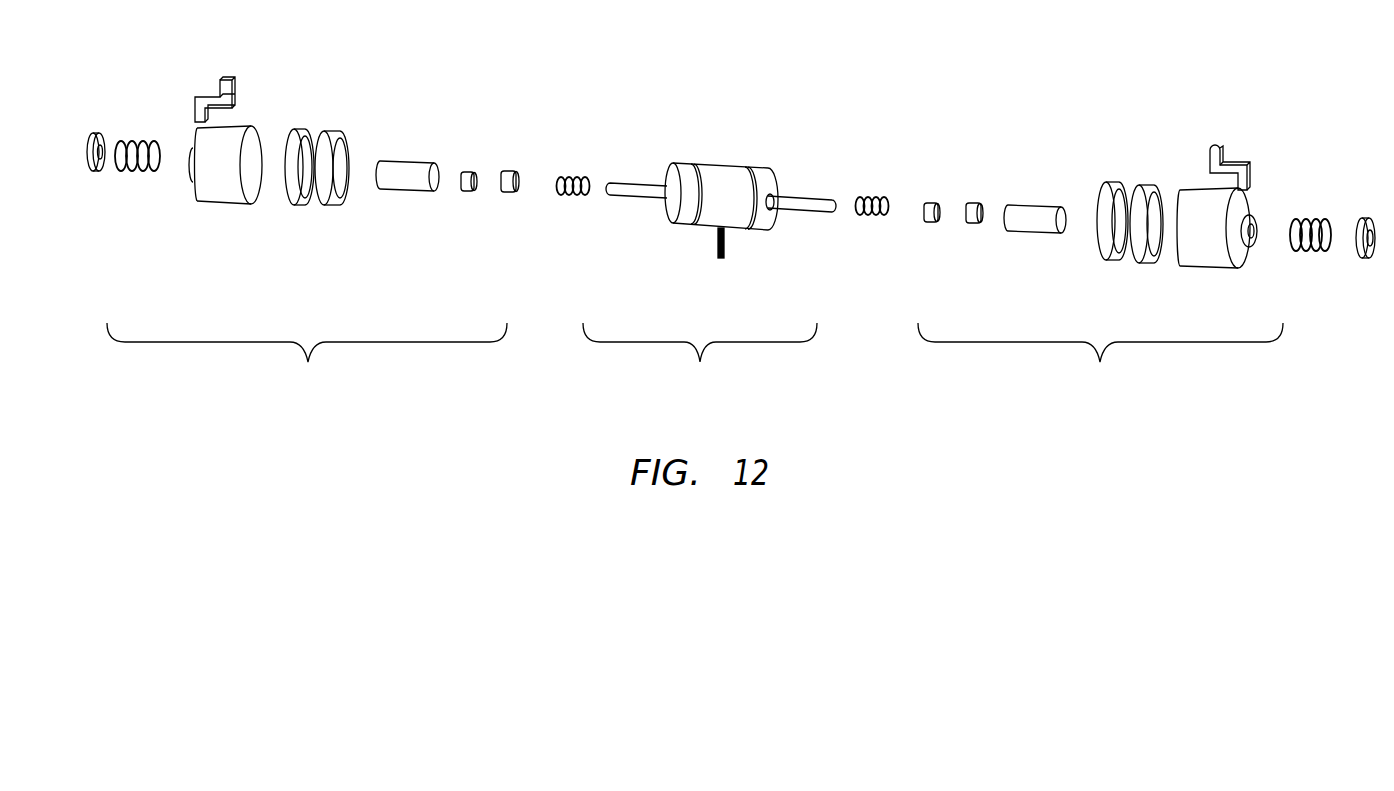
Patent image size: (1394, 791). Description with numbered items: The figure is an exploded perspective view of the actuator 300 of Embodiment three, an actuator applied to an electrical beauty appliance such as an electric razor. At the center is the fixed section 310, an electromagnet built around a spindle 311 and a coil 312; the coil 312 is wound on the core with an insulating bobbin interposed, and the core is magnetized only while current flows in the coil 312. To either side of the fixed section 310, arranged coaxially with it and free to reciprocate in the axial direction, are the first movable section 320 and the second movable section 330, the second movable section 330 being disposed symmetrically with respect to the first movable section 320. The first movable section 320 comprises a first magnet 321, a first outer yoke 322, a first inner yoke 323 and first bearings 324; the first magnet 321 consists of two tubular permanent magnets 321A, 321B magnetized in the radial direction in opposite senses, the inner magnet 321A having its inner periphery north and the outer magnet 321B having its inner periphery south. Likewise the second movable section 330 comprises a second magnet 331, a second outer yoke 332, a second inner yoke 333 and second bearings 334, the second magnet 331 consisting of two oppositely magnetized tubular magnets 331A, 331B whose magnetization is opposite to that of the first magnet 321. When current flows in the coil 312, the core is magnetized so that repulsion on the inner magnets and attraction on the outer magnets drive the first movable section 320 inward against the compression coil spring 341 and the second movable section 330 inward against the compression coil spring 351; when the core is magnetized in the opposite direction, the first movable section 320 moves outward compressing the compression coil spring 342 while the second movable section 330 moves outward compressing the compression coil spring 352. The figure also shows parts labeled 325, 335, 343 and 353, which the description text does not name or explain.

The actuator 300 is at (858, 84).
The fixed section 310 is at (700, 361).
The spindle 311 is at (790, 200).
The coil 312 is at (720, 207).
The first movable section 320 is at (1100, 361).
The first magnet 321 is at (1133, 254).
The first magnet 321A is at (1105, 258).
The first magnet 321B is at (1138, 260).
The first outer yoke 322 is at (1235, 265).
The first inner yoke 323 is at (1037, 232).
The first bearings 324 is at (972, 223).
The bracket 325 is at (1223, 152).
The second movable section 330 is at (307, 361).
The second magnet 331 is at (271, 226).
The second magnet 331A is at (325, 195).
The second magnet 331B is at (293, 193).
The second outer yoke 332 is at (197, 190).
The second inner yoke 333 is at (403, 189).
The second bearings 334 is at (507, 191).
The bracket 335 is at (229, 79).
The compression coil spring 341 is at (874, 197).
The compression coil spring 342 is at (1323, 221).
The washer 343 is at (1367, 259).
The compression coil spring 351 is at (569, 177).
The compression coil spring 352 is at (129, 140).
The washer 353 is at (97, 134).